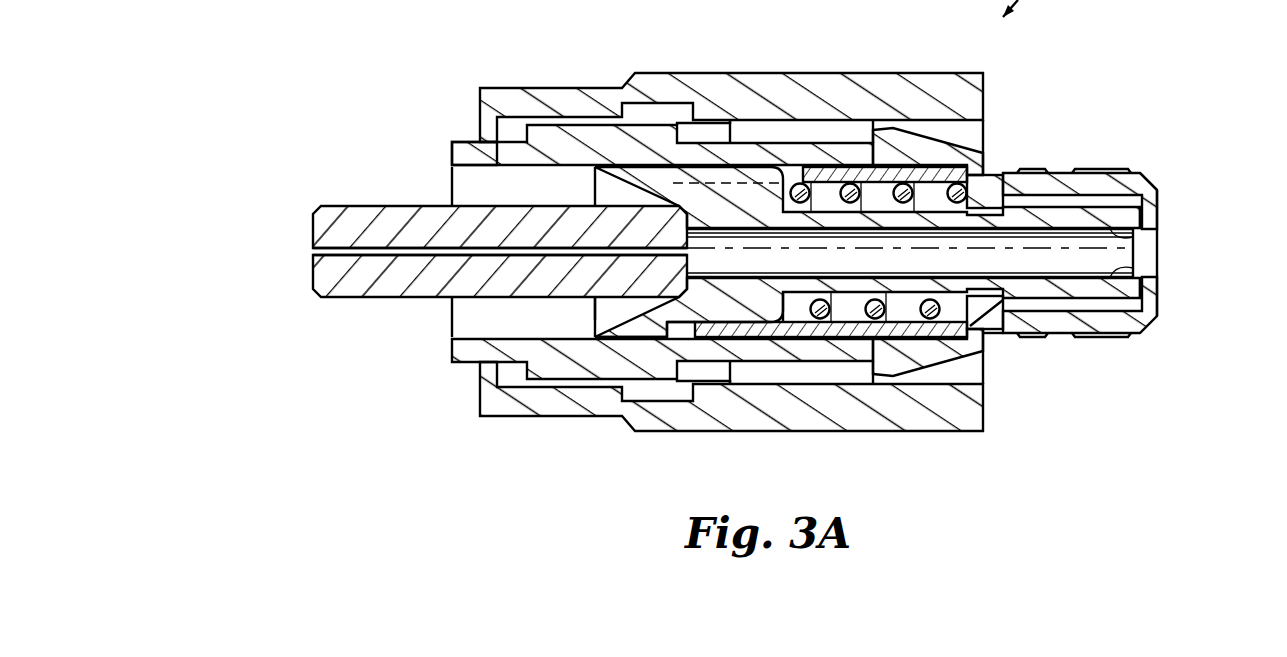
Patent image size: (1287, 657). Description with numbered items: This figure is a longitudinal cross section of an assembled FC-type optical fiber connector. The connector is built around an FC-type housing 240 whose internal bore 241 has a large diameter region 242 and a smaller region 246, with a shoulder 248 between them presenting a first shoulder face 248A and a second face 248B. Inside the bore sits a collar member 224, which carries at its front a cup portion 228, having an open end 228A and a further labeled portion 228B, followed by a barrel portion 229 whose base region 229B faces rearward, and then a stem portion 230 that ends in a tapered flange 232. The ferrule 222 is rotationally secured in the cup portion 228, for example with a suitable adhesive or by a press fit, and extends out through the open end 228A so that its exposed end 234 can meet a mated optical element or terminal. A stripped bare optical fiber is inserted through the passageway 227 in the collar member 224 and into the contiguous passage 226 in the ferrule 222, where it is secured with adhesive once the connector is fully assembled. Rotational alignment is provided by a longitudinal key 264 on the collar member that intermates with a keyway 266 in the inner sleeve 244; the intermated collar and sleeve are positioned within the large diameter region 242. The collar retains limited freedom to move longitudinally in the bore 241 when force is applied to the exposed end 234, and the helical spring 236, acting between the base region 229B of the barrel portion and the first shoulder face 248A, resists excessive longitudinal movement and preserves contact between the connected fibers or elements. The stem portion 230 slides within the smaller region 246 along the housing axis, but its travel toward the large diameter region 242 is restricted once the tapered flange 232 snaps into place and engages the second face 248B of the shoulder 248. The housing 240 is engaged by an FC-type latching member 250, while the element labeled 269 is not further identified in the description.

The ferrule 222 is at (370, 206).
The collar member 224 is at (1160, 246).
The ferrule passage 226 is at (340, 251).
The passageway 227 is at (1146, 272).
The cup portion 228 is at (627, 318).
The open end 228A is at (588, 320).
The insulator rear portion 228B is at (697, 338).
The ferrule sleeve 229 is at (748, 318).
The base region 229B is at (815, 332).
The stem portion 230 is at (937, 210).
The tapered flange 232 is at (1055, 193).
The exposed end 234 is at (318, 264).
The helical spring 236 is at (932, 314).
The FC-type housing 240 is at (1093, 157).
The bore 241 is at (458, 320).
The large diameter region 242 is at (455, 174).
The inner sleeve 244 is at (857, 340).
The smaller region 246 is at (1160, 205).
The shoulder 248 is at (990, 207).
The first shoulder face 248A is at (972, 344).
The second face 248B is at (1037, 337).
The FC-type latching member 250 is at (665, 83).
The longitudinal key 264 is at (737, 118).
The keyway 266 is at (810, 170).
The inner sleeve 269 is at (575, 130).